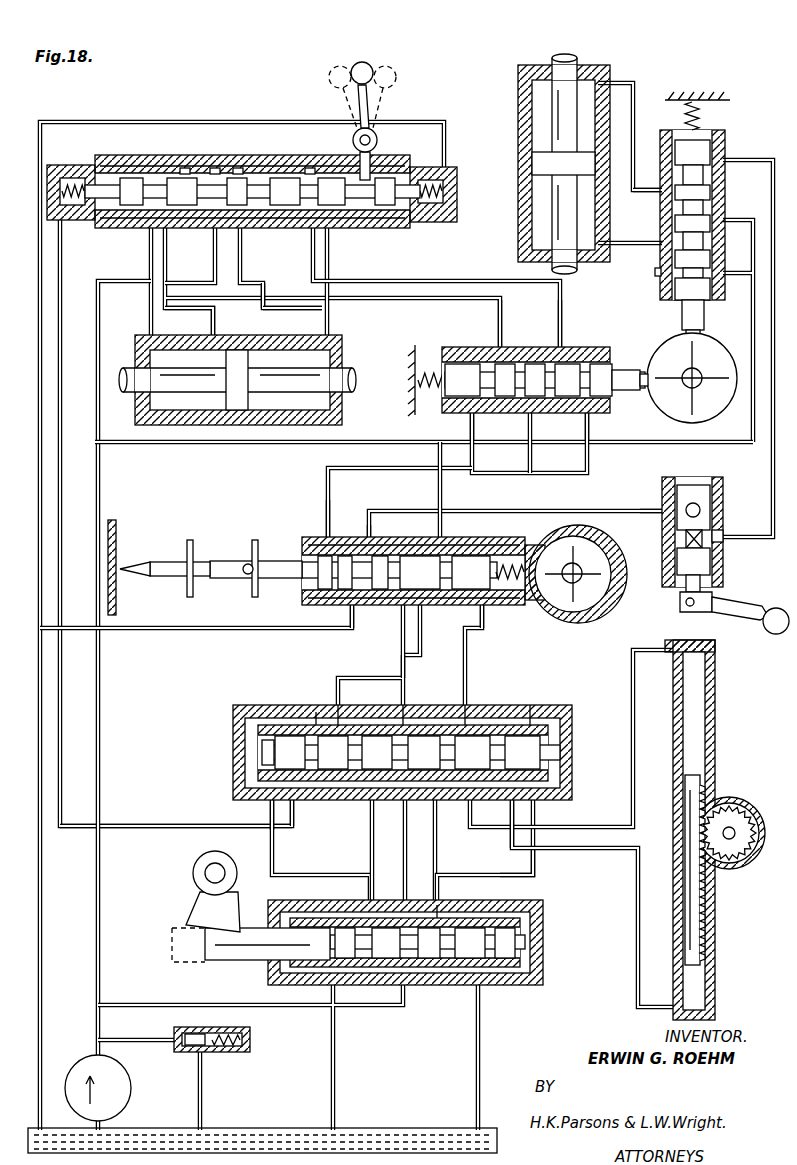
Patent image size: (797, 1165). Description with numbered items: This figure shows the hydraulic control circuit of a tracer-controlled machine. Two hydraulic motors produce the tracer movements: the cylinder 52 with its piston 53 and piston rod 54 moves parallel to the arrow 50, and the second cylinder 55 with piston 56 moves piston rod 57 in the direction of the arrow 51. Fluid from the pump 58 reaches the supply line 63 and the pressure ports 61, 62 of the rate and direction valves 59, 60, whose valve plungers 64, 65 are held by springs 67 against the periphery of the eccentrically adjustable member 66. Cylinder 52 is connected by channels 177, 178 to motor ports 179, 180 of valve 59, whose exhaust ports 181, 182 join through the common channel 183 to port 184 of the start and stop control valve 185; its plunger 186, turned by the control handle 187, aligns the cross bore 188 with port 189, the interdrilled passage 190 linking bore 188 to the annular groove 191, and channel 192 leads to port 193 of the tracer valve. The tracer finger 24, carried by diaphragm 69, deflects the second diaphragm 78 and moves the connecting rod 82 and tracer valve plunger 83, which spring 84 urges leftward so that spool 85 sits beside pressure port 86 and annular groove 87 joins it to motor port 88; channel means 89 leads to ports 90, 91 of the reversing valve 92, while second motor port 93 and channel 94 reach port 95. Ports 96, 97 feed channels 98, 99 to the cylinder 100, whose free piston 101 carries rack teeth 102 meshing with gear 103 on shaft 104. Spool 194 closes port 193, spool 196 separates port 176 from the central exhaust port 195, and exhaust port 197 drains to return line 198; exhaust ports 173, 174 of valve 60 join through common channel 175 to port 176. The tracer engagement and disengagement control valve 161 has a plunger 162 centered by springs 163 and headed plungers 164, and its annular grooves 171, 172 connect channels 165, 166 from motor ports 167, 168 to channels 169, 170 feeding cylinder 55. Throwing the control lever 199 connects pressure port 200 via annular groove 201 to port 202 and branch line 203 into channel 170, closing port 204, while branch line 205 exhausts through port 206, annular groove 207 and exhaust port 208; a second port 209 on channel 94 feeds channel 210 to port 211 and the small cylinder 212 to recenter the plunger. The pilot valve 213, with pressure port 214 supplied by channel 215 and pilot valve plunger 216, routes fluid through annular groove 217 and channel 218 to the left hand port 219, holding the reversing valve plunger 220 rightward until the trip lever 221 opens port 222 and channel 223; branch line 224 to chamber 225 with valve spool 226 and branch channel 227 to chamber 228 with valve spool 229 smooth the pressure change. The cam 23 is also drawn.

The cam 23 is at (575, 623).
The tracer finger 24 is at (145, 575).
The arrow 50 is at (538, 33).
The arrow 51 is at (356, 328).
The cylinder 52 is at (518, 75).
The piston 53 is at (532, 162).
The piston rod 54 is at (575, 62).
The second cylinder 55 is at (342, 425).
The piston 56 is at (238, 410).
The piston rod 57 is at (345, 375).
The pump 58 is at (80, 1060).
The rate and direction valve 59 is at (725, 135).
The rate and direction valve 60 is at (605, 347).
The pressure port 61 is at (712, 222).
The pressure port 62 is at (532, 413).
The supply line 63 is at (100, 742).
The valve plunger 64 is at (712, 140).
The valve plunger 65 is at (445, 360).
The eccentrically adjustable member 66 is at (705, 345).
The springs 67 is at (690, 102).
The diaphragm 69 is at (188, 540).
The second diaphragm 78 is at (250, 545).
The connecting rod 82 is at (278, 558).
The tracer valve plunger 83 is at (400, 558).
The spring 84 is at (505, 560).
The spool 85 is at (425, 556).
The pressure port 86 is at (455, 556).
The annular groove 87 is at (470, 555).
The motor port 88 is at (482, 610).
The channel means 89 is at (467, 667).
The port 90 is at (470, 718).
The port 91 is at (350, 718).
The reversing valve 92 is at (552, 705).
The second motor port 93 is at (421, 612).
The channel 94 is at (403, 662).
The port 95 is at (410, 718).
The port 96 is at (452, 812).
The port 97 is at (372, 820).
The channel 98 is at (597, 826).
The channel 99 is at (605, 849).
The cylinder 100 is at (712, 725).
The free piston 101 is at (688, 950).
The rack teeth 102 is at (705, 805).
The gear 103 is at (740, 820).
The shaft 104 is at (732, 840).
The tracer engagement and disengagement control valve 161 is at (405, 225).
The plunger 162 is at (360, 165).
The springs 163 is at (78, 208).
The headed plungers 164 is at (90, 175).
The channel 165 is at (503, 312).
The channel 166 is at (562, 302).
The motor port 167 is at (500, 347).
The motor port 168 is at (561, 345).
The channel 169 is at (148, 262).
The channel 170 is at (329, 265).
The annular groove 171 is at (155, 180).
The annular groove 172 is at (312, 175).
The exhaust port 173 is at (475, 413).
The exhaust port 174 is at (590, 413).
The common channel 175 is at (560, 472).
The port 176 is at (325, 540).
The channel 177 is at (618, 243).
The channel 178 is at (622, 80).
The motor port 179 is at (658, 272).
The motor port 180 is at (660, 190).
The exhaust port 181 is at (728, 238).
The exhaust port 182 is at (728, 160).
The common channel 183 is at (752, 440).
The port 184 is at (715, 535).
The start and stop control valve 185 is at (715, 478).
The plunger 186 is at (712, 570).
The control handle 187 is at (750, 618).
The cross bore 188 is at (690, 500).
The port 189 is at (660, 511).
The interdrilled passage 190 is at (675, 540).
The annular groove 191 is at (723, 545).
The channel 192 is at (530, 511).
The port 193 is at (368, 537).
The spool 194 is at (353, 610).
The central exhaust port 195 is at (330, 605).
The spool 196 is at (328, 475).
The exhaust port 197 is at (423, 668).
The return line 198 is at (200, 630).
The control lever 199 is at (368, 62).
The pressure port 200 is at (292, 275).
The annular groove 201 is at (238, 160).
The port 202 is at (248, 232).
The branch line 203 is at (320, 310).
The port 204 is at (345, 222).
The branch line 205 is at (215, 310).
The port 206 is at (215, 245).
The annular groove 207 is at (225, 178).
The exhaust port 208 is at (185, 155).
The second port 209 is at (406, 815).
The channel 210 is at (185, 826).
The port 211 is at (62, 222).
The small cylinder 212 is at (45, 175).
The pilot valve 213 is at (543, 985).
The pressure port 214 is at (410, 982).
The channel 215 is at (380, 1008).
The pilot valve plunger 216 is at (215, 962).
The annular groove 217 is at (400, 920).
The channel 218 is at (300, 876).
The left hand port 219 is at (270, 812).
The reversing valve plunger 220 is at (562, 750).
The trip lever 221 is at (193, 890).
The port 222 is at (442, 910).
The channel 223 is at (538, 876).
The branch line 224 is at (295, 802).
The chamber 225 is at (285, 735).
The valve spool 226 is at (316, 703).
The branch channel 227 is at (512, 808).
The chamber 228 is at (520, 718).
The valve spool 229 is at (448, 875).